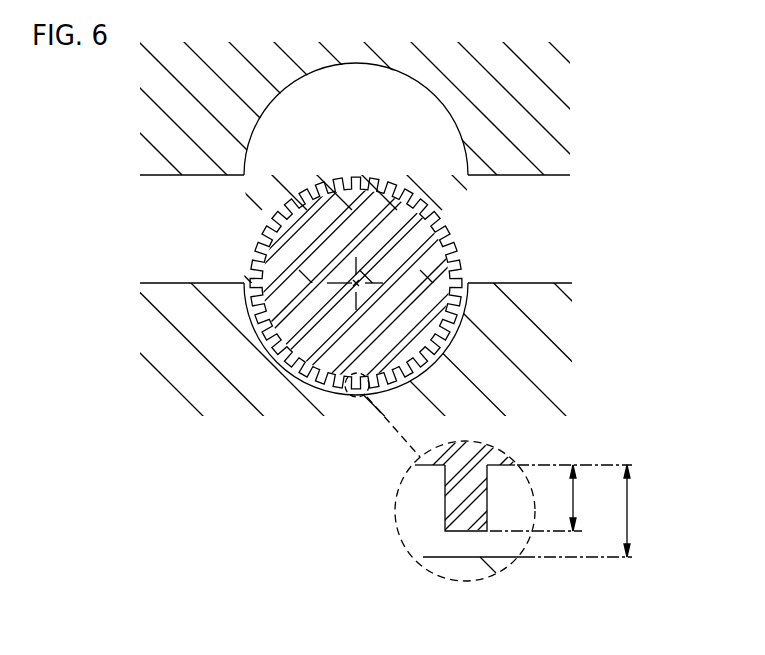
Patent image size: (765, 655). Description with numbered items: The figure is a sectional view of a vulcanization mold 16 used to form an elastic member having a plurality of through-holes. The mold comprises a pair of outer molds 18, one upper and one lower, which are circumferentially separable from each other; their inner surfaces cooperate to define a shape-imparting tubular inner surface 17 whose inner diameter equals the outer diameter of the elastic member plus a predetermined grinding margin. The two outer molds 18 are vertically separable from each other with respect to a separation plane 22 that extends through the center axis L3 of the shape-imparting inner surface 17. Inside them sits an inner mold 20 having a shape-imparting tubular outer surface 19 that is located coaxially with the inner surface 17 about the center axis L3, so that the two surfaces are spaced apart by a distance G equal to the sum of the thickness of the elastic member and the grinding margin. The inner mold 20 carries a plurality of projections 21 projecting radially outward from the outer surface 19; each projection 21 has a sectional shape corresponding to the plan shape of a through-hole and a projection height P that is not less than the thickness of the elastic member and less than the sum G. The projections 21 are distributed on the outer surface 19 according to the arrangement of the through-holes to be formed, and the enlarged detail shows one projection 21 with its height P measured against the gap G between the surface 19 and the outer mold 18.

The vulcanization mold 16 is at (692, 78).
The shape-imparting tubular inner surface 17 is at (375, 67).
The outer mold 18 is at (147, 122).
The shape-imparting tubular outer surface 19 is at (342, 177).
The inner mold 20 is at (287, 250).
The projection 21 is at (442, 223).
The separation plane 22 is at (168, 178).
The center axis L3 is at (358, 282).
The projection height P is at (561, 498).
The sum of the thickness of the elastic member and the grinding margin G is at (587, 511).